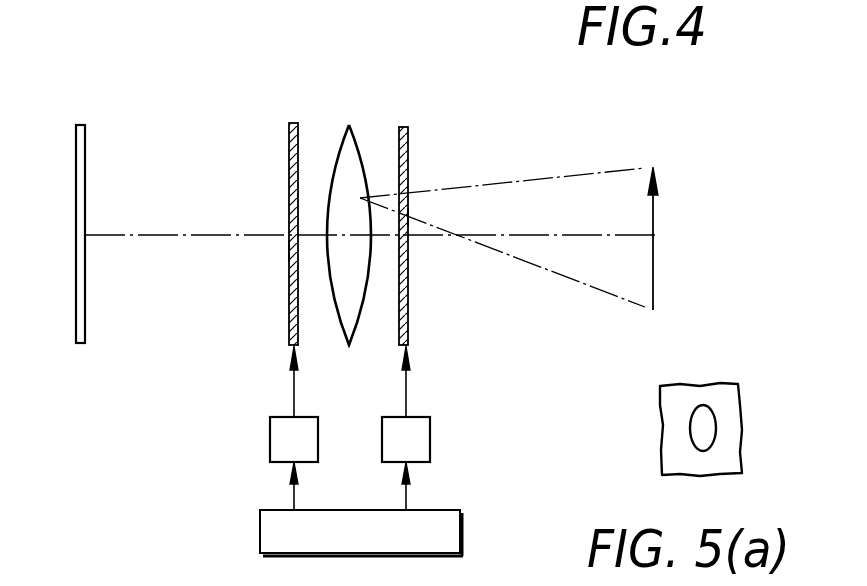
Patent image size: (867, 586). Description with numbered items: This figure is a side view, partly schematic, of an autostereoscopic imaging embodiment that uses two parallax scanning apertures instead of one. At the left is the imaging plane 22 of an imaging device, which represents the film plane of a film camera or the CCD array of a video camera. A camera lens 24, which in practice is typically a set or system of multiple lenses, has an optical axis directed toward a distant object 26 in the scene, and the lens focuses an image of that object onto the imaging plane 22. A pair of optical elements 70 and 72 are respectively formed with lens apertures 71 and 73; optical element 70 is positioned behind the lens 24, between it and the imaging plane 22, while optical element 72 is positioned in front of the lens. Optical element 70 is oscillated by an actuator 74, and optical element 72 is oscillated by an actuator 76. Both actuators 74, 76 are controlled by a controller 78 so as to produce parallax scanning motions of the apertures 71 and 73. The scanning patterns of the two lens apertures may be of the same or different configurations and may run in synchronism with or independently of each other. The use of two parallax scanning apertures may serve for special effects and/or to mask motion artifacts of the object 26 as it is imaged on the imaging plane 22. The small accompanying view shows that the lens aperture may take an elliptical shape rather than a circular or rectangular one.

The imaging plane 22 is at (86, 162).
The camera lens 24 is at (352, 149).
The distant object 26 is at (658, 236).
The optical element 70 is at (290, 124).
The lens aperture 71 is at (288, 256).
The optical element 72 is at (410, 128).
The lens aperture 73 is at (410, 217).
The actuator 74 is at (270, 437).
The actuator 76 is at (430, 436).
The controller 78 is at (260, 531).